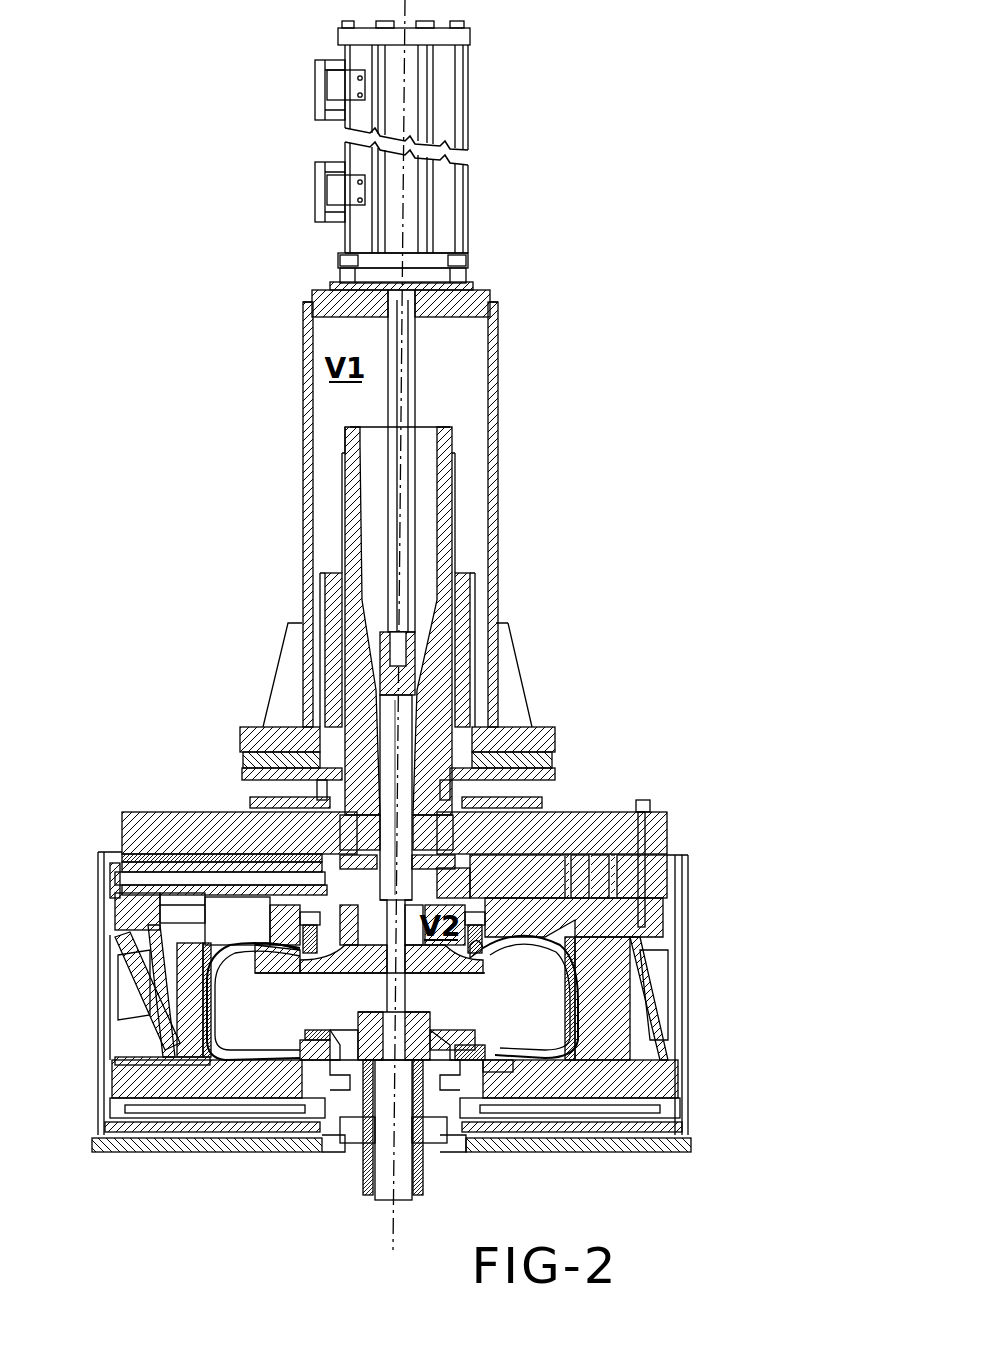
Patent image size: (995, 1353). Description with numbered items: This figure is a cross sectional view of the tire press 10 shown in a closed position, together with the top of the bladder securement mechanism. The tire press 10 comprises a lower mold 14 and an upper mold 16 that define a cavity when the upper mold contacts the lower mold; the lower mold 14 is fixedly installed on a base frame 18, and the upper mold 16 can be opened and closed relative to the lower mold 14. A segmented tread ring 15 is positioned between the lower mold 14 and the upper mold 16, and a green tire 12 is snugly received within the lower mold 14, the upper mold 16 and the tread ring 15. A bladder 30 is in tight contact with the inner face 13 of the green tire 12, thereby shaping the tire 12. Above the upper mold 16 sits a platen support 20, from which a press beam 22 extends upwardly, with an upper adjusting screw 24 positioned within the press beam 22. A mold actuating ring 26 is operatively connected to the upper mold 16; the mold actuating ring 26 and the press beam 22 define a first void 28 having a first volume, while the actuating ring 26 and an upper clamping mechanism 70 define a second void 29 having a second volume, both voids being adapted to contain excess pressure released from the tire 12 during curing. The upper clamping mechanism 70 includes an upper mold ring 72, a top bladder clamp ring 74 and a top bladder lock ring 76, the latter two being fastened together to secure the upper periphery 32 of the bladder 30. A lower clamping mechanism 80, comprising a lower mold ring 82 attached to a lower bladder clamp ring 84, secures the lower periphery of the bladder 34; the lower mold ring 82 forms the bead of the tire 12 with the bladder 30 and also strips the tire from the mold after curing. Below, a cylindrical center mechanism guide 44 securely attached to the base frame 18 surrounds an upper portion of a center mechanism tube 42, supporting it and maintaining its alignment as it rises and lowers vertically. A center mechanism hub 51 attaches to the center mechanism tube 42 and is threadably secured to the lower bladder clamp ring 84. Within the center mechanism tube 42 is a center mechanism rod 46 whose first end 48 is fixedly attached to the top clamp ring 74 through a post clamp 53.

The tire press 10 is at (185, 377).
The green tire 12 is at (527, 900).
The inner face 13 is at (517, 948).
The lower mold 14 is at (600, 1087).
The tread ring 15 is at (600, 990).
The upper mold 16 is at (607, 915).
The base frame 18 is at (668, 1153).
The platen support 20 is at (128, 842).
The press beam 22 is at (497, 395).
The upper adjusting screw 24 is at (455, 443).
The mold actuating ring 26 is at (472, 935).
The first void 28 is at (316, 360).
The second void 29 is at (427, 902).
The bladder 30 is at (557, 962).
The upper periphery 32 is at (485, 950).
The lower periphery of the bladder 34 is at (300, 1050).
The center mechanism tube 42 is at (418, 1115).
The center mechanism guide 44 is at (363, 1182).
The center mechanism rod 46 is at (378, 1192).
The first end 48 is at (318, 940).
The center mechanism hub 51 is at (360, 1040).
The post clamp 53 is at (372, 945).
The upper clamping mechanism 70 is at (300, 940).
The upper mold ring 72 is at (302, 946).
The top bladder clamp ring 74 is at (245, 945).
The top bladder lock ring 76 is at (138, 815).
The lower clamping mechanism 80 is at (470, 1067).
The lower mold ring 82 is at (485, 1057).
The lower bladder clamp ring 84 is at (522, 1047).